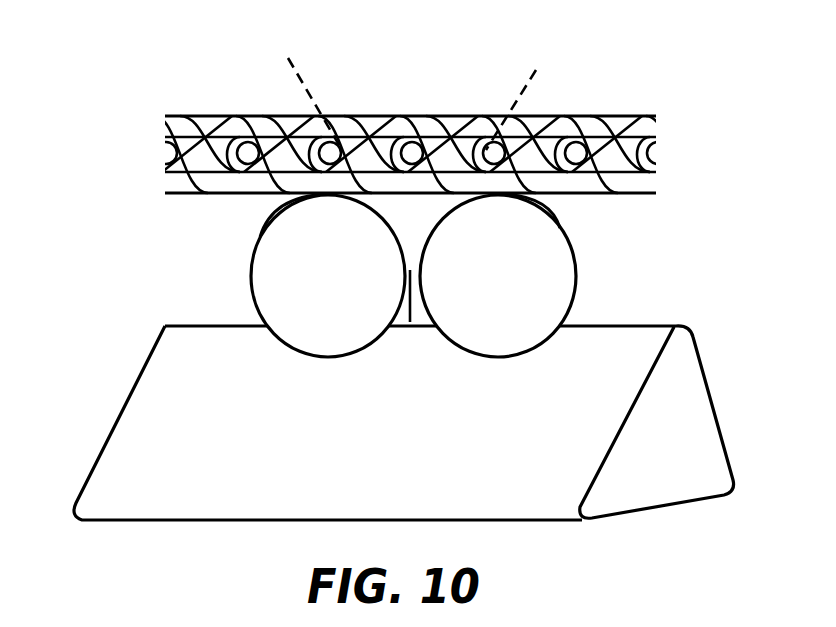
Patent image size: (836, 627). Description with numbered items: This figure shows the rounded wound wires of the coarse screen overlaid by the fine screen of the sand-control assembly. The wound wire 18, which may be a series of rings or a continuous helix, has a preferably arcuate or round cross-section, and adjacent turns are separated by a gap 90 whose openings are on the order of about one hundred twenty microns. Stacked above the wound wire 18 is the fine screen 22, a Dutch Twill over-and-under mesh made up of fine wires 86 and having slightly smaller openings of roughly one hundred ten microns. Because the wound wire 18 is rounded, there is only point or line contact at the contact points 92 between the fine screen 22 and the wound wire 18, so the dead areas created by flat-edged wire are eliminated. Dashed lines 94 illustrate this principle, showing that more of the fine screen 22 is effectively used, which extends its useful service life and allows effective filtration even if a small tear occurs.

The wound wire 18 is at (567, 267).
The fine screen 22 is at (406, 125).
The fine wires 86 is at (218, 117).
The gap 90 is at (410, 322).
The points of contact 92 is at (262, 236).
The dashed lines 94 is at (288, 58).